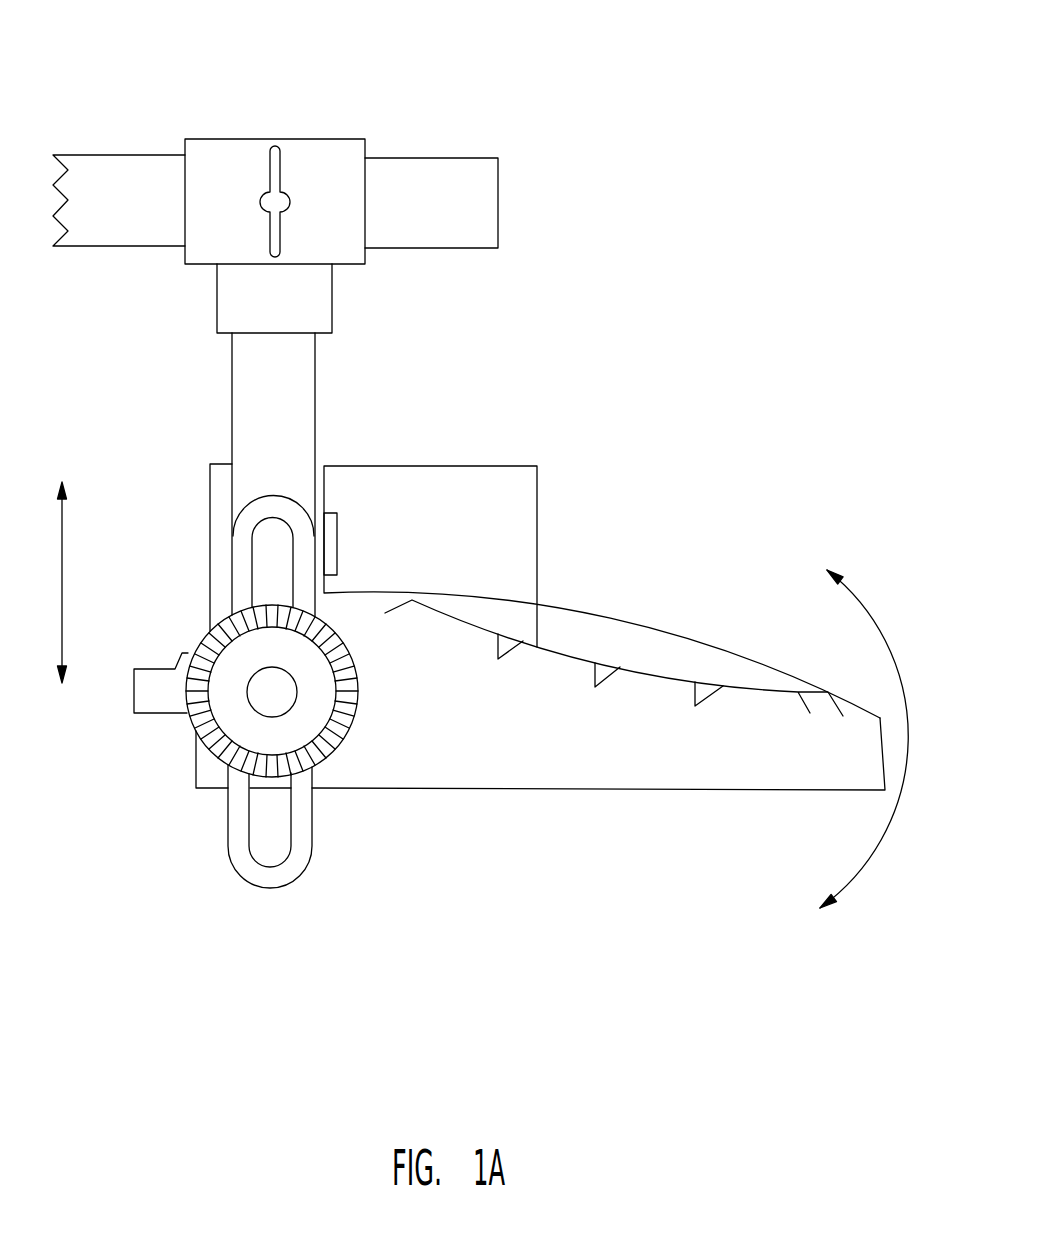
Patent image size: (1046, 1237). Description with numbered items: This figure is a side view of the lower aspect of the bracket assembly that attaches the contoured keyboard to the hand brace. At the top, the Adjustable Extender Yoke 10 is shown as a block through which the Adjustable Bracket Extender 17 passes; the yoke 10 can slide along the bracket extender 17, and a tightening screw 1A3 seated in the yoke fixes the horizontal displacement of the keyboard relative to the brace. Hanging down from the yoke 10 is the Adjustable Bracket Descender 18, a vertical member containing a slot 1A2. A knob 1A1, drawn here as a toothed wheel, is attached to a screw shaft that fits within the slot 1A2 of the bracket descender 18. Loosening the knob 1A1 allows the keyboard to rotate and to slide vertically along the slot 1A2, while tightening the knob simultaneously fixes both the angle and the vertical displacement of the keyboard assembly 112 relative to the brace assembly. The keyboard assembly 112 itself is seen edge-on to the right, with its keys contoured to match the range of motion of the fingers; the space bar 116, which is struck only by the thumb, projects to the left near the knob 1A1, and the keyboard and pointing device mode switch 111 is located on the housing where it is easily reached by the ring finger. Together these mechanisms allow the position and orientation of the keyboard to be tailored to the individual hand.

The Adjustable Extender Yoke 10 is at (331, 130).
The tightening screw 1A3 is at (263, 130).
The Adjustable Bracket Extender 17 is at (517, 212).
The Adjustable Bracket Descender 18 is at (331, 405).
The keyboard and pointing device mode switch 111 is at (356, 541).
The keyboard assembly 112 is at (602, 807).
The space bar 116 is at (171, 635).
The knob 1A1 is at (176, 731).
The slot 1A2 is at (241, 866).